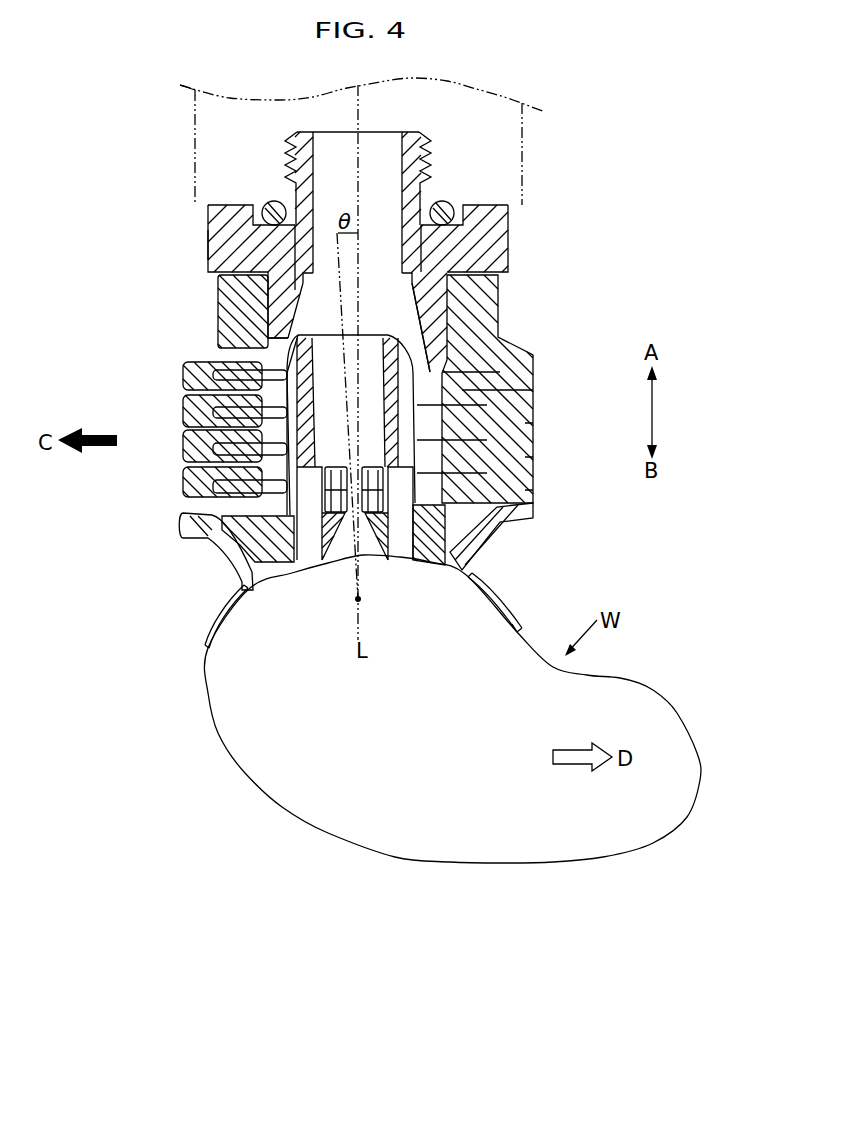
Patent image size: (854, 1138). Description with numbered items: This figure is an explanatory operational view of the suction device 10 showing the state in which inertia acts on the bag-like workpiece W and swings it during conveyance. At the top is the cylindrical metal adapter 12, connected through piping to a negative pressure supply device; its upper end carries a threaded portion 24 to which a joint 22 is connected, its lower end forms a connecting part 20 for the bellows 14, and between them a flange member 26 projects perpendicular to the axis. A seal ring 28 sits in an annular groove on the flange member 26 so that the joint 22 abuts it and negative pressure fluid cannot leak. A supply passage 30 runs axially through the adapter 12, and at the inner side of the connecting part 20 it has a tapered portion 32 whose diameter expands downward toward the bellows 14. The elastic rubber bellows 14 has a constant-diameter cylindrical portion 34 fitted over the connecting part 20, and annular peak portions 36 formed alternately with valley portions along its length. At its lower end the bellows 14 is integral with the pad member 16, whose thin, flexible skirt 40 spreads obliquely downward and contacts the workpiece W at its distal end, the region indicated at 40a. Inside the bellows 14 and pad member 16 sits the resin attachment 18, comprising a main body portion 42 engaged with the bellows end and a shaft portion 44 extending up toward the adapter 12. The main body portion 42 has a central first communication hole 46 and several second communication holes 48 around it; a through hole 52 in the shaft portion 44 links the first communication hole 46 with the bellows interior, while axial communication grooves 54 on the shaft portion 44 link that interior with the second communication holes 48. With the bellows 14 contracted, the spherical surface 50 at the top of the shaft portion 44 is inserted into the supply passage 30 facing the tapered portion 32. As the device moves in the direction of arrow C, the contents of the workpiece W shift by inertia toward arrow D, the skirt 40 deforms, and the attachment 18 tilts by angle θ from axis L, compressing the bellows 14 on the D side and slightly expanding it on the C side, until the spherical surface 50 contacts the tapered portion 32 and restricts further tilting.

The suction device 10 is at (121, 110).
The adapter 12 is at (369, 252).
The bellows 14 is at (545, 408).
The pad member 16 is at (213, 603).
The attachment 18 is at (368, 325).
The connecting part 20 is at (288, 295).
The joint 22 is at (498, 152).
The threaded portion 24 is at (336, 191).
The flange member 26 is at (226, 241).
The seal ring 28 is at (444, 205).
The supply passage 30 is at (373, 148).
The tapered portion 32 is at (417, 327).
The cylindrical portion 34 is at (487, 313).
The annular peak portions 36 is at (183, 525).
The skirt 40 is at (509, 624).
The guide plate end 40a is at (497, 613).
The main body portion 42 is at (480, 518).
The shaft portion 44 is at (307, 368).
The first communication hole 46 is at (343, 567).
The second communication holes 48 is at (313, 567).
The spherical surface 50 is at (288, 338).
The through hole 52 is at (270, 416).
The communication grooves 54 is at (292, 414).